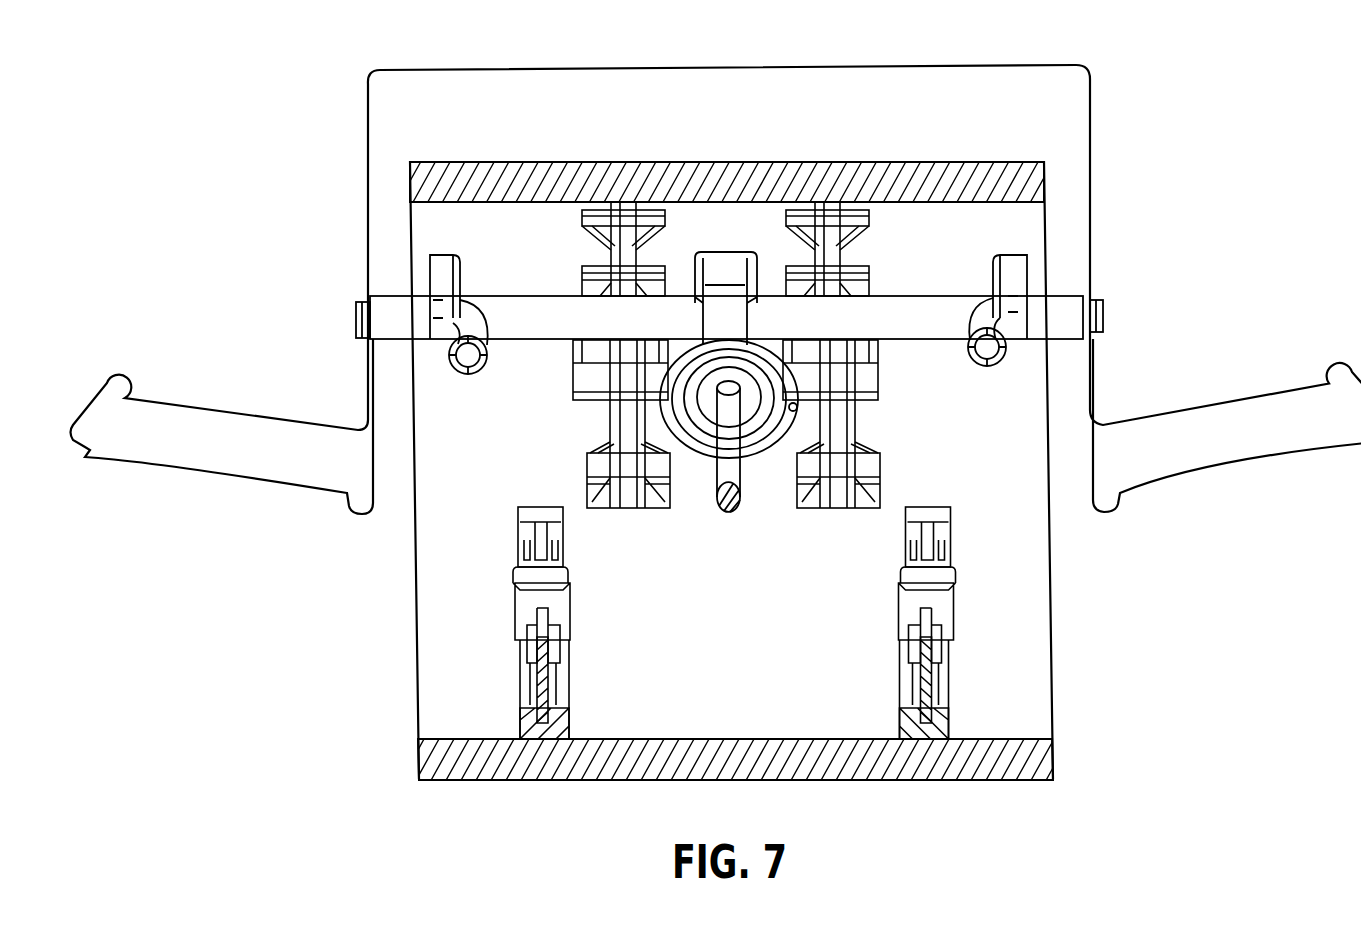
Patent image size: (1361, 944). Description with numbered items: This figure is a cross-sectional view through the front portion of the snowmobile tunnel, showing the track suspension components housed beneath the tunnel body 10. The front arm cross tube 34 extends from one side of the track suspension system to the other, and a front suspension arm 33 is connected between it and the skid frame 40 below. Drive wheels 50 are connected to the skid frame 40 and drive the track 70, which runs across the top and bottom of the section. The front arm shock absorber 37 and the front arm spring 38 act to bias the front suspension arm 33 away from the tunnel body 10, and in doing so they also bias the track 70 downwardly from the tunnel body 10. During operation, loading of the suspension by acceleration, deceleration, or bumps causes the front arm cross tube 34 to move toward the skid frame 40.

The tunnel body 10 is at (810, 68).
The track 70 is at (822, 183).
The front arm cross tube 34 is at (905, 292).
The front suspension arm 33 is at (483, 372).
The drive wheels 50 is at (582, 222).
The front arm spring 38 is at (695, 458).
The front arm shock absorber 37 is at (740, 483).
The skid frame 40 is at (557, 641).